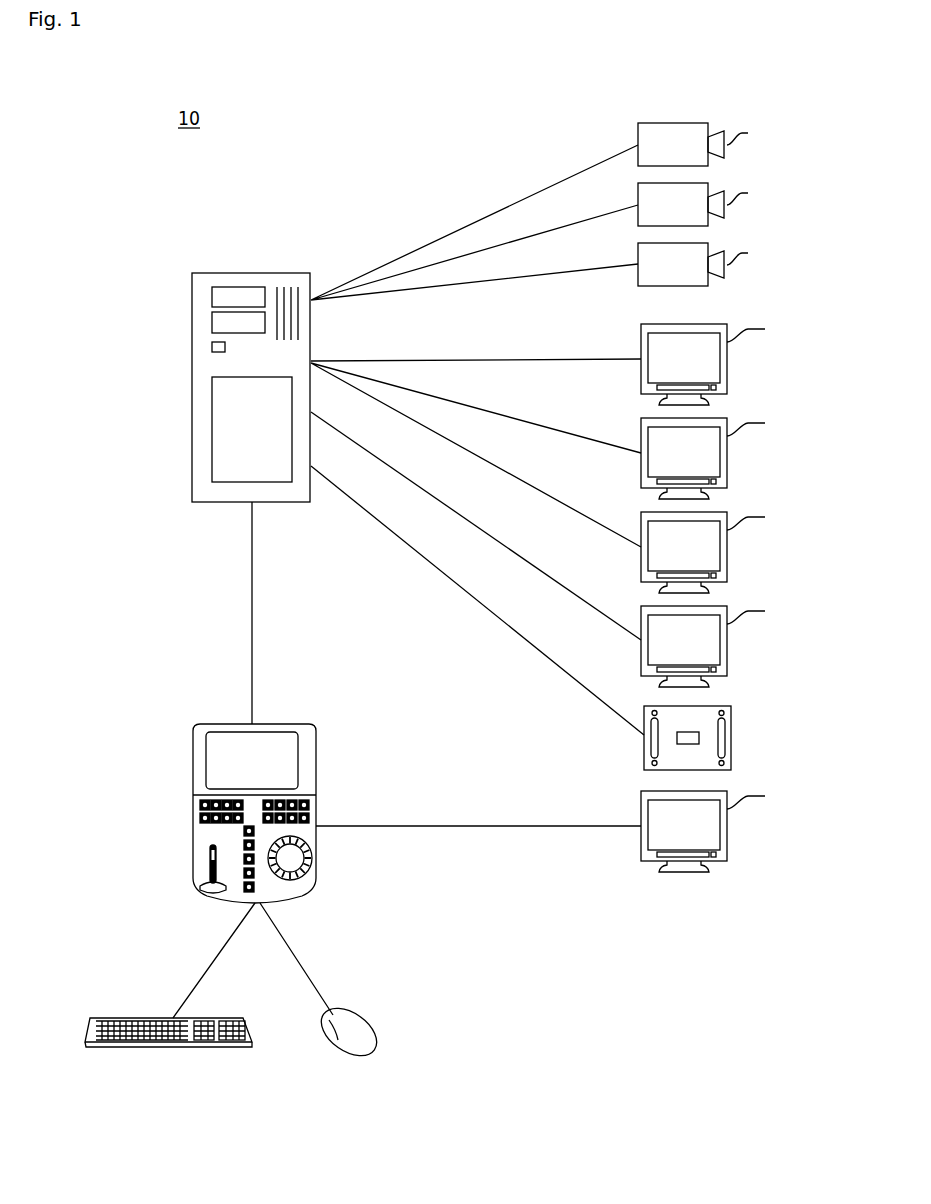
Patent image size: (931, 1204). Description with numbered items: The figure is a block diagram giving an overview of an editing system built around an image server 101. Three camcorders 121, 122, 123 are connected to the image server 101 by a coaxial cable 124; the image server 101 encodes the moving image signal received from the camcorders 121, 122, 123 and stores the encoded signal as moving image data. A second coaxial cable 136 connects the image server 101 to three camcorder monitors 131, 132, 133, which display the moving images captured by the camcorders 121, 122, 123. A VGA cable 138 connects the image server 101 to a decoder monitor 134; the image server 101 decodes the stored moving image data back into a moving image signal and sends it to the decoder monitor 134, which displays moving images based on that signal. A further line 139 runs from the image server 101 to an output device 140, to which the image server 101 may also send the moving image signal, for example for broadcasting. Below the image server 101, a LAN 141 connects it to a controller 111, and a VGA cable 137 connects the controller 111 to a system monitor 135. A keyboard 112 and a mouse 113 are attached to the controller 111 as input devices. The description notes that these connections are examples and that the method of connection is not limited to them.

The image server 101 is at (252, 275).
The controller 111 is at (200, 722).
The keyboard 112 is at (112, 1014).
The mouse 113 is at (362, 1010).
The camcorder 121 is at (710, 144).
The camcorder 122 is at (710, 204).
The camcorder 123 is at (710, 264).
The coaxial cable 124 is at (445, 240).
The camcorder monitor 131 is at (721, 361).
The camcorder monitor 132 is at (721, 455).
The camcorder monitor 133 is at (721, 549).
The decoder monitor 134 is at (721, 643).
The system monitor 135 is at (721, 828).
The coaxial cable 136 is at (510, 358).
The VGA cable 137 is at (460, 824).
The VGA cable 138 is at (507, 550).
The signal line 139 is at (548, 650).
The output device 140 is at (731, 730).
The LAN 141 is at (253, 604).